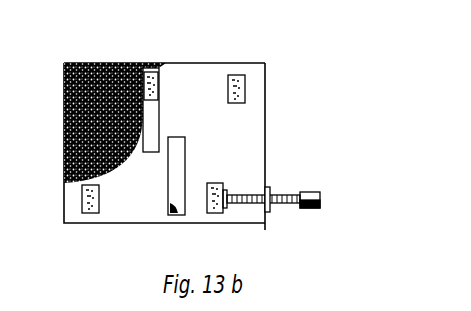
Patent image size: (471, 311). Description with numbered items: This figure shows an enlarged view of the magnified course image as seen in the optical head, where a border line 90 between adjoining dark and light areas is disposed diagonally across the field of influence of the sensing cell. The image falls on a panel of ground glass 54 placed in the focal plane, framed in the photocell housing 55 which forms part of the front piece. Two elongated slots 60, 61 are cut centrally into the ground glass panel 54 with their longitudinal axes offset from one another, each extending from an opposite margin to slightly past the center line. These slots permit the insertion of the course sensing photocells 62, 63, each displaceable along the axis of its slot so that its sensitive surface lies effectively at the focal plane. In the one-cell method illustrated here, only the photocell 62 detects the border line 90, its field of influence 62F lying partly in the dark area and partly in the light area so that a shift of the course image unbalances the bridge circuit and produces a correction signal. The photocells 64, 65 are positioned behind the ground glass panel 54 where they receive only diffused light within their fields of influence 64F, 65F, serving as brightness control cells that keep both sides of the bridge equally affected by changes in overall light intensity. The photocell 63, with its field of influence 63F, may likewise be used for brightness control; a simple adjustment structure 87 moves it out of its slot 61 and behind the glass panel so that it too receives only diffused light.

The panel of ground glass 54 is at (64, 118).
The photocell housing 55 is at (265, 160).
The elongated slot 60 is at (160, 118).
The elongated slot 61 is at (179, 216).
The photocell 62 is at (152, 63).
The field of influence of photocell 62 62F is at (154, 90).
The photocell 63 is at (222, 184).
The field of influence of photocell 63 63F is at (230, 193).
The photocell 64 is at (89, 214).
The field of influence of photocell 64 64F is at (82, 200).
The photocell 65 is at (241, 78).
The field of influence of photocell 65 65F is at (247, 84).
The adjustment structure 87 is at (278, 205).
The border line 90 is at (125, 165).